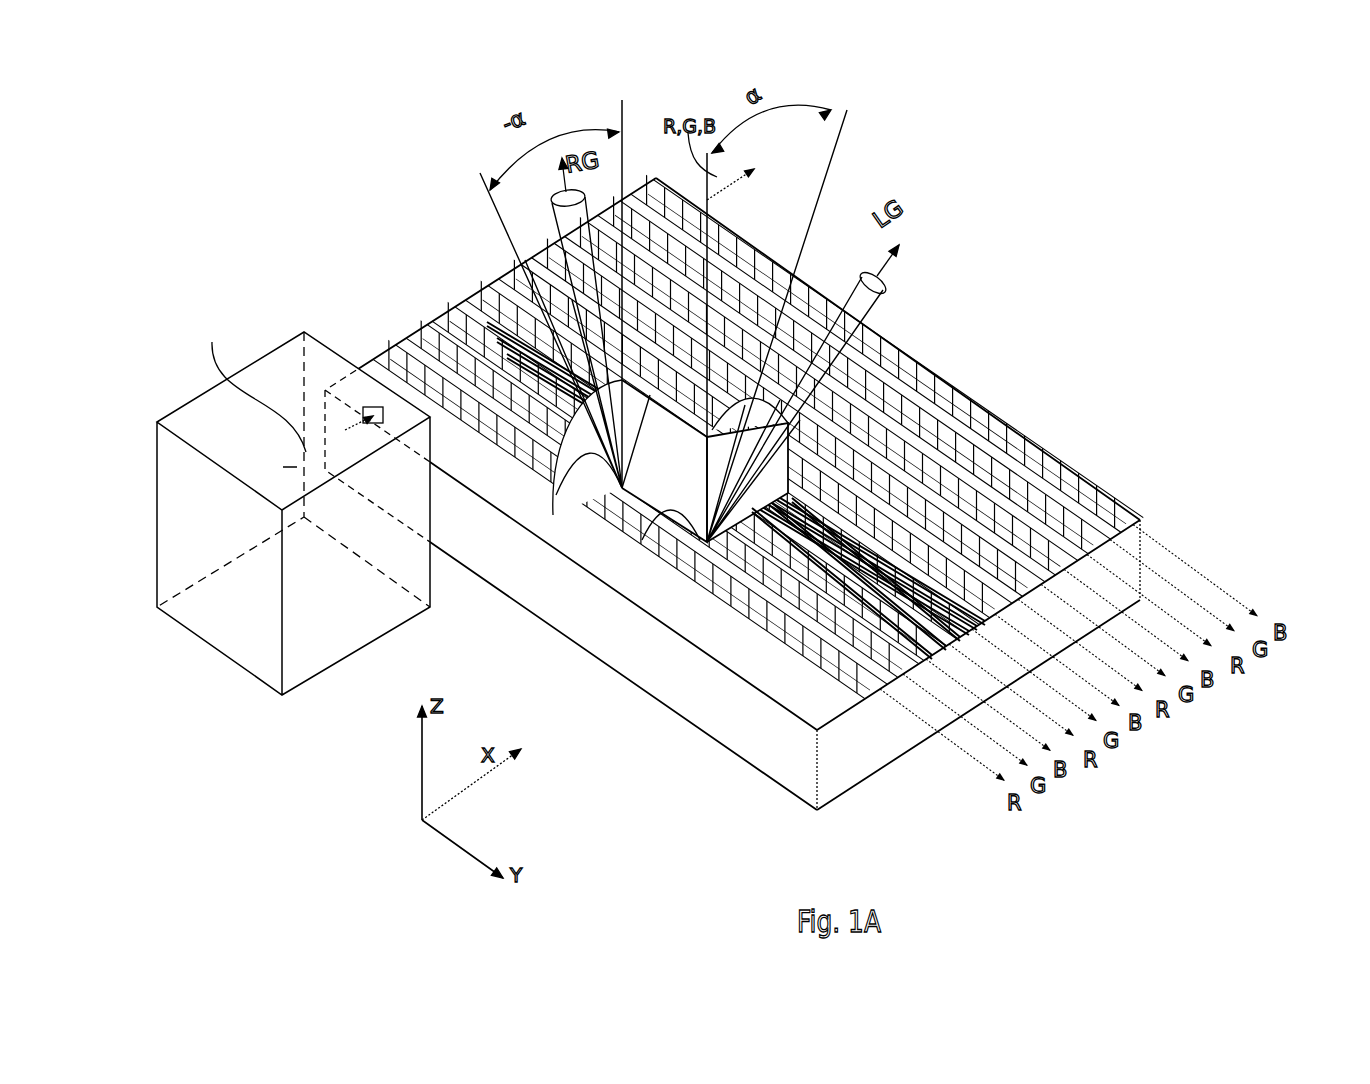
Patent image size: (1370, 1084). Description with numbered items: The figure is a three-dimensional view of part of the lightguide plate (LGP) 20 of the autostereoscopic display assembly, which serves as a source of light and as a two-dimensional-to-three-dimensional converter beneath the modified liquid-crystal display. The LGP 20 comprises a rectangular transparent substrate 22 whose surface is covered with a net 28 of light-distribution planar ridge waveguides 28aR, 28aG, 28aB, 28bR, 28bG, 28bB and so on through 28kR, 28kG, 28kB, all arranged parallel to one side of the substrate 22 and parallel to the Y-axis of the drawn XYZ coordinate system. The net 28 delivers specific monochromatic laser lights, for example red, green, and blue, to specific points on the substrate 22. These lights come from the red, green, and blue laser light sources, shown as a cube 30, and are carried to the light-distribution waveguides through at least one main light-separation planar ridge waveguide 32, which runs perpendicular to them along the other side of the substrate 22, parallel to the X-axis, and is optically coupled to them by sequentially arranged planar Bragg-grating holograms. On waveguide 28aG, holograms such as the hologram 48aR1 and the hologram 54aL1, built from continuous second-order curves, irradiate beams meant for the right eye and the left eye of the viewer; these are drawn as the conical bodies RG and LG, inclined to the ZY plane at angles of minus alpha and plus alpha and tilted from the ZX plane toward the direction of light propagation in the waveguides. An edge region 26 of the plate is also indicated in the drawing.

The lightguide plate (LGP) 20 is at (995, 320).
The rectangular transparent substrate 22 is at (656, 646).
The output edge face 26 is at (840, 705).
The net of light-distribution planar ridge waveguides 28 is at (848, 432).
The light-distribution planar ridge waveguide 28aR is at (747, 606).
The light-distribution planar ridge waveguide 28aG is at (833, 633).
The light-distribution planar ridge waveguide 28aB is at (900, 653).
The light-distribution planar ridge waveguide 28bR is at (488, 338).
The light-distribution planar ridge waveguide 28bG is at (502, 332).
The light-distribution planar ridge waveguide 28bB is at (530, 305).
The light-distribution planar ridge waveguide 28kR is at (918, 430).
The light-distribution planar ridge waveguide 28kG is at (997, 460).
The light-distribution planar ridge waveguide 28kB is at (1072, 480).
The laser light source 30 is at (337, 607).
The main light-separation planar ridge waveguide 32 is at (410, 390).
The hologram 48aR1 is at (560, 470).
The hologram 54aL1 is at (670, 533).